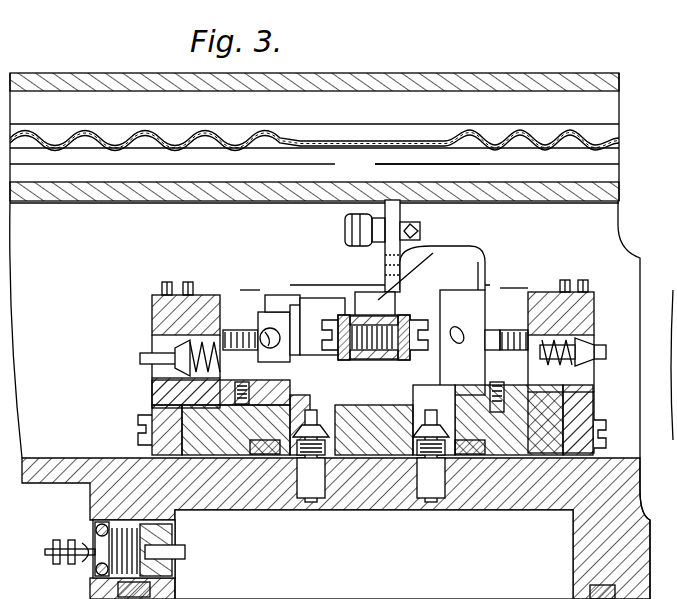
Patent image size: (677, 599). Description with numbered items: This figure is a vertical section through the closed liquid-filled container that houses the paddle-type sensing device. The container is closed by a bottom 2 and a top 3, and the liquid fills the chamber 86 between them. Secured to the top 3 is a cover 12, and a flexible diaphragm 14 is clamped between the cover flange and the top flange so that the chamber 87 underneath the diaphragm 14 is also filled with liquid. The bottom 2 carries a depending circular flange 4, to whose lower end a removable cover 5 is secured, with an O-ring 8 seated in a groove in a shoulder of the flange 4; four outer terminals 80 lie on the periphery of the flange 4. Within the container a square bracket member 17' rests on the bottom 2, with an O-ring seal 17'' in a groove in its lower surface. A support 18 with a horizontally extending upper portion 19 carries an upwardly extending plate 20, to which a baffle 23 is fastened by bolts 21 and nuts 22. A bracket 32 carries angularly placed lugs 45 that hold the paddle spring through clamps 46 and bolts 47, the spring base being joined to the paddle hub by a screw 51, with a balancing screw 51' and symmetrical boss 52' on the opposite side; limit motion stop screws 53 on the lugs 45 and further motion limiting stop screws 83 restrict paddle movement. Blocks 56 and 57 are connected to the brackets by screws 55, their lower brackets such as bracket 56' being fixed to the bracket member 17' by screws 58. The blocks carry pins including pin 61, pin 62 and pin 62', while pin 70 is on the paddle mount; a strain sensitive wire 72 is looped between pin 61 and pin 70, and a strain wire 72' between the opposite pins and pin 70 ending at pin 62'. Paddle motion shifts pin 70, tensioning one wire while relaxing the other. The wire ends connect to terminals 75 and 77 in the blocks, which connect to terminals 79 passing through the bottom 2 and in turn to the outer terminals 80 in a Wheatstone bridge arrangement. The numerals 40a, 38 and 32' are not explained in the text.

The cover 12 is at (444, 78).
The flexible diaphragm 14 is at (305, 130).
The chamber 87 is at (368, 172).
The top 3 is at (85, 204).
The chamber 86 is at (66, 270).
The bottom 2 is at (42, 460).
The depending circular flange 4 is at (573, 563).
The O-ring 8 is at (175, 588).
The outer terminals 80 is at (185, 553).
The removable cover 5 is at (42, 548).
The block 57 is at (152, 308).
The pin 61 is at (163, 283).
The pin 62' is at (184, 272).
The pin 62 is at (563, 276).
The terminals 77 is at (140, 355).
The limit motion stop screws 53 is at (235, 330).
The clamps 46 is at (279, 327).
The bolts 47 is at (272, 348).
The lugs 45 is at (300, 292).
The screw 51 is at (322, 324).
The strain wire 72' is at (240, 276).
The plate 20 is at (405, 262).
The bolts 21 is at (345, 230).
The nuts 22 is at (422, 232).
The slot 40a is at (385, 255).
The baffle 23 is at (385, 266).
The pin 70 is at (385, 280).
The cam member 38 is at (431, 273).
The horizontally extending upper portion 19 is at (476, 247).
The support 18 is at (485, 250).
The boss 52' is at (374, 353).
The screw 51' is at (438, 321).
The bracket 56' is at (448, 342).
The motion limiting stop screws 83 is at (500, 330).
The screws 58 is at (285, 395).
The strain sensitive wire 72 is at (511, 273).
The block 56 is at (568, 357).
The terminals 75 is at (618, 340).
The support block 32' is at (517, 419).
The screws 55 is at (137, 422).
The bracket member 17' is at (187, 417).
The bracket 32 is at (195, 427).
The terminals 79 is at (420, 410).
The O-ring seal 17'' is at (381, 474).